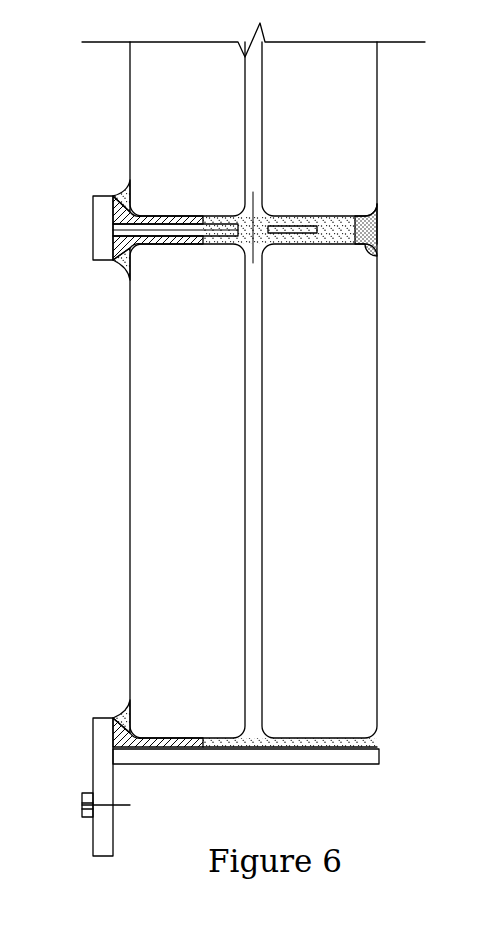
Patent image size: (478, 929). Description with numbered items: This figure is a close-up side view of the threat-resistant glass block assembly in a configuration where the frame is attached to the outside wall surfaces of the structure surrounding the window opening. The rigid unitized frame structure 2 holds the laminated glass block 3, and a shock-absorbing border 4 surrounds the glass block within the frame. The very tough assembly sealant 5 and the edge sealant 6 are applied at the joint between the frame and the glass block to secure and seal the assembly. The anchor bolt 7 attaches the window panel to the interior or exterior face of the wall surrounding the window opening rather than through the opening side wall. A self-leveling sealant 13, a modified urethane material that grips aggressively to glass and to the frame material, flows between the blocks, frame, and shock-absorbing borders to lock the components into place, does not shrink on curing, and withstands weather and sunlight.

The rigid unitized frame structure 2 is at (241, 756).
The laminated glass block 3 is at (350, 418).
The shock-absorbing border 4 is at (115, 262).
The assembly sealant 5 is at (368, 229).
The edge sealant 6 is at (125, 188).
The anchor bolt 7 is at (82, 805).
The self-leveling sealant 13 is at (337, 220).